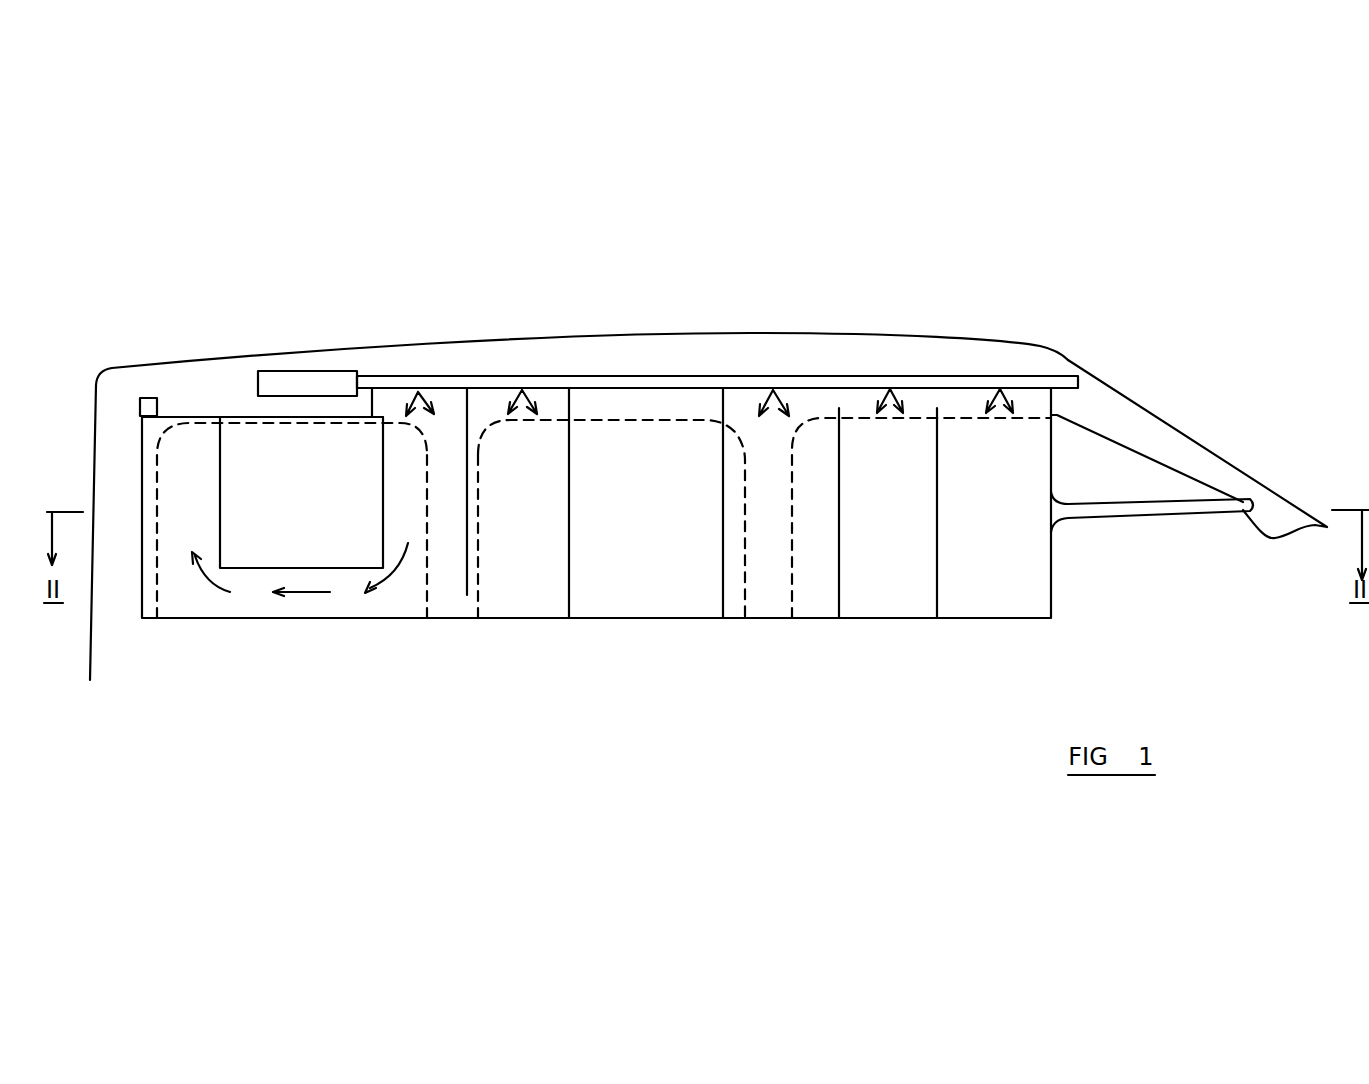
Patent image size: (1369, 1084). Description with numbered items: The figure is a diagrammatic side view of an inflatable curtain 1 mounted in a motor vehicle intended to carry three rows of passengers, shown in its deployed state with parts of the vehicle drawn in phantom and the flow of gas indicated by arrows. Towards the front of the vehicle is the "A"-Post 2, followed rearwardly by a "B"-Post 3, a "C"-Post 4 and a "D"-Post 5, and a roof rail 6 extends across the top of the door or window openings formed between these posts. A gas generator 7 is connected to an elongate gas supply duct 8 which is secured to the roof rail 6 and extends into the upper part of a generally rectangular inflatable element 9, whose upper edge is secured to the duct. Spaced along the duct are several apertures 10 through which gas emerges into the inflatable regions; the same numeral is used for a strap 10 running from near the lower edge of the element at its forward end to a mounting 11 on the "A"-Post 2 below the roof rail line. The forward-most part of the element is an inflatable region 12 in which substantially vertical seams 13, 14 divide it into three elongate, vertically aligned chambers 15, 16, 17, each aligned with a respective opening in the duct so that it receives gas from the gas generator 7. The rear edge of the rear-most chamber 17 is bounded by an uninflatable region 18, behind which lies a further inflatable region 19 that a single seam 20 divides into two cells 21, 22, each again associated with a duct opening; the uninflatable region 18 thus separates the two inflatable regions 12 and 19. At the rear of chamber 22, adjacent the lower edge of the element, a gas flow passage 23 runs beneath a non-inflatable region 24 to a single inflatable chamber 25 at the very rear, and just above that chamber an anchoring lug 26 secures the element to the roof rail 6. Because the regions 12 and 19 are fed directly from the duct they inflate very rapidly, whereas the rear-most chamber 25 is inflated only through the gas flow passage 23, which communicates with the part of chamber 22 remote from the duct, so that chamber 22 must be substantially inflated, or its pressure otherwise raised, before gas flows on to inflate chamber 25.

The inflatable curtain 1 is at (783, 304).
The "A"-Post 2 is at (1162, 445).
The "B"-Post 3 is at (763, 465).
The "C"-Post 4 is at (455, 450).
The "D"-Post 5 is at (105, 448).
The roof rail 6 is at (593, 357).
The gas generator 7 is at (303, 383).
The gas supply duct 8 is at (930, 377).
The inflatable element 9 is at (1024, 589).
The aperture 10 is at (418, 392).
The mounting 11 is at (1247, 502).
The forward-most inflatable region 12 is at (895, 634).
The seam 13 is at (937, 525).
The seam 14 is at (839, 523).
The inflatable chamber 15 is at (990, 490).
The inflatable chamber 16 is at (893, 490).
The rear-most chamber of forward region 17 is at (816, 490).
The uninflatable region 18 is at (683, 567).
The further inflatable region 19 is at (439, 643).
The seam 20 is at (467, 540).
The cell 21 is at (611, 503).
The rear-most chamber 22 is at (451, 536).
The gas flow passage 23 is at (347, 575).
The non-inflatable region 24 is at (301, 492).
The rear-most inflatable chamber 25 is at (172, 523).
The anchoring lug 26 is at (147, 408).